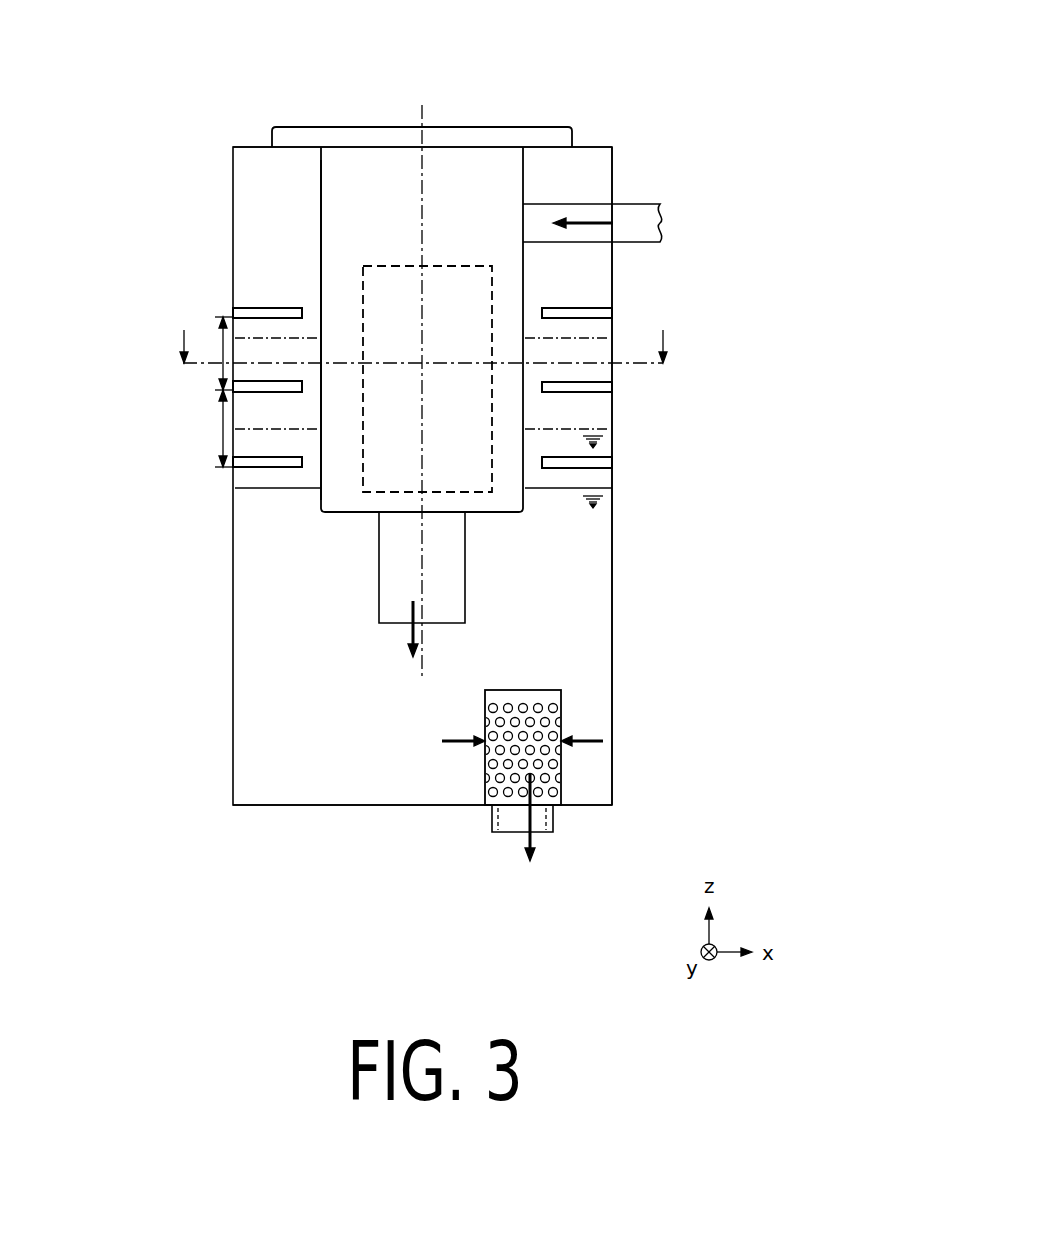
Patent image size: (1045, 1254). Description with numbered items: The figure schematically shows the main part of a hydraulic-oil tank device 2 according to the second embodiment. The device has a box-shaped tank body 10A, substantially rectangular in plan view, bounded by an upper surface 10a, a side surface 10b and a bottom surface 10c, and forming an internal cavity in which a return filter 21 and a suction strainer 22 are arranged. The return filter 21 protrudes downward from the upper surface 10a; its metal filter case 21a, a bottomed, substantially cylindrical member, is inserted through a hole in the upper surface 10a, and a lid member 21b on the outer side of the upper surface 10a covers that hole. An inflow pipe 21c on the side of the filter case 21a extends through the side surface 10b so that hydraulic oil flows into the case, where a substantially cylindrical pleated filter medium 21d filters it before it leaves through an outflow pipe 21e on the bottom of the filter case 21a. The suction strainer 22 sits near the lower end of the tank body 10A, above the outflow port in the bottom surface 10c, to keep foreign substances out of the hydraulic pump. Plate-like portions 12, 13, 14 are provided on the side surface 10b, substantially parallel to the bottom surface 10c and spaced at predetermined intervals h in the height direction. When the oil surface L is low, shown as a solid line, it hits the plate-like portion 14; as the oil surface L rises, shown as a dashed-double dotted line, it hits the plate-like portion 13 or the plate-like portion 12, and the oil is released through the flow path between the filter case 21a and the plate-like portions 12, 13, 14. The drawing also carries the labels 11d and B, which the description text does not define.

The hydraulic-oil tank device 2 is at (670, 31).
The tank body 10A is at (613, 549).
The upper surface 10a is at (603, 146).
The side surface 10b is at (613, 168).
The bottom surface 10c is at (600, 807).
The drain port 11d is at (548, 833).
The plate-like portion 12 is at (262, 308).
The plate-like portion 13 is at (283, 388).
The plate-like portion 14 is at (282, 465).
The return filter 21 is at (320, 196).
The filter case 21a is at (321, 284).
The lid member 21b is at (295, 139).
The inflow pipe 21c is at (636, 204).
The filter medium 21d is at (363, 493).
The outflow pipe 21e is at (378, 607).
The suction strainer 22 is at (568, 703).
The oil surface L is at (592, 338).
The section line B- B is at (425, 334).
The predetermined interval h is at (216, 392).